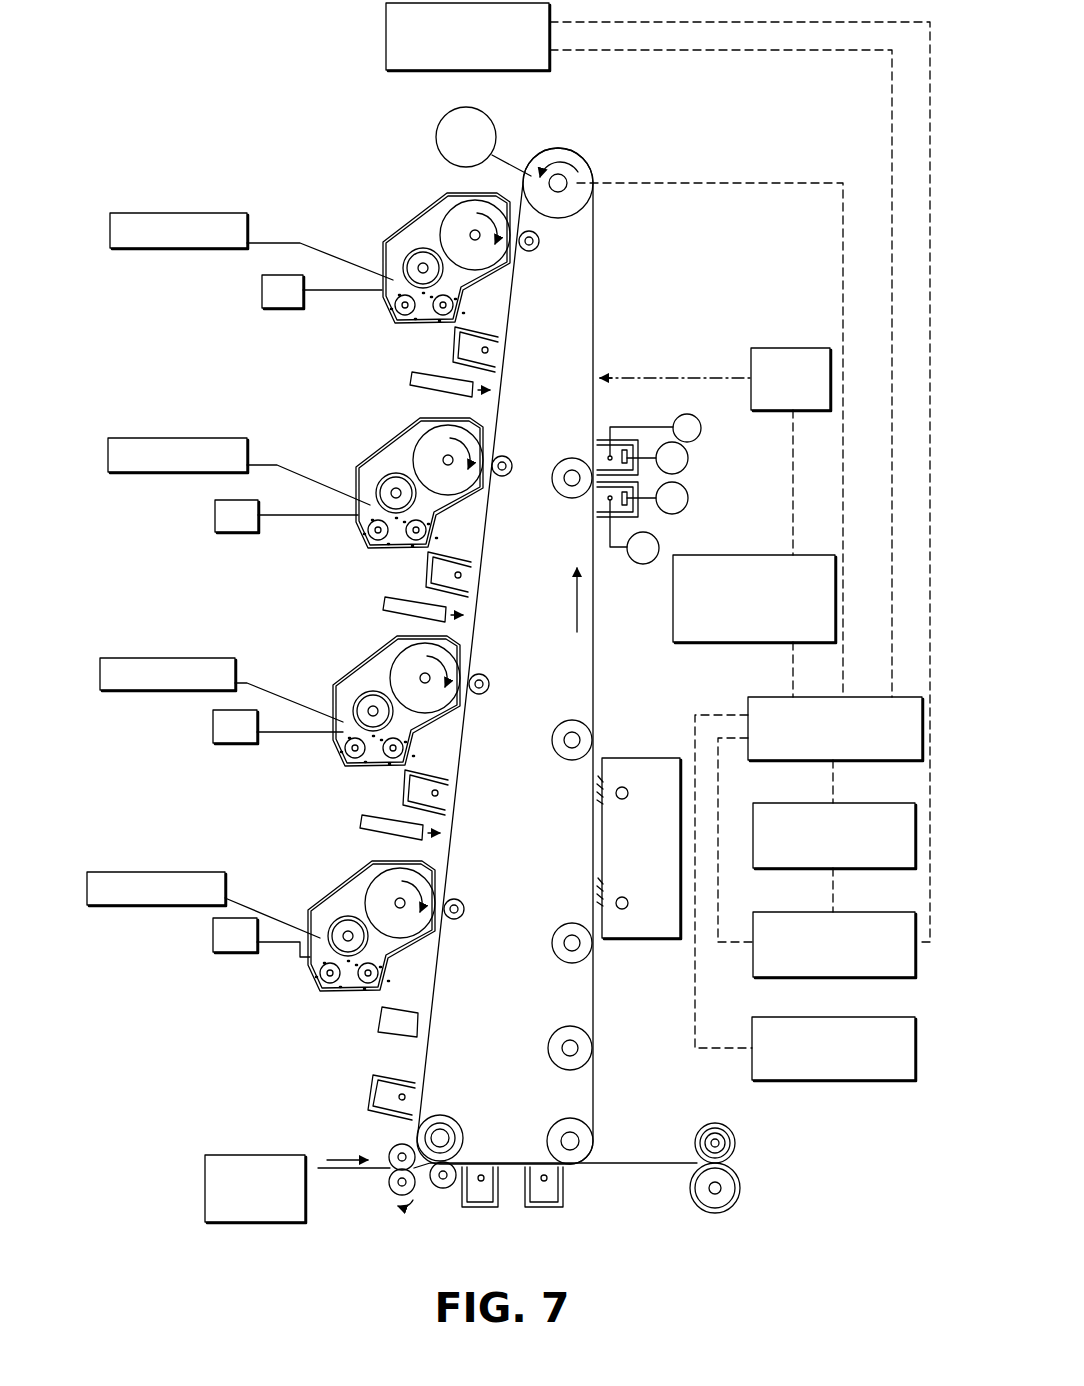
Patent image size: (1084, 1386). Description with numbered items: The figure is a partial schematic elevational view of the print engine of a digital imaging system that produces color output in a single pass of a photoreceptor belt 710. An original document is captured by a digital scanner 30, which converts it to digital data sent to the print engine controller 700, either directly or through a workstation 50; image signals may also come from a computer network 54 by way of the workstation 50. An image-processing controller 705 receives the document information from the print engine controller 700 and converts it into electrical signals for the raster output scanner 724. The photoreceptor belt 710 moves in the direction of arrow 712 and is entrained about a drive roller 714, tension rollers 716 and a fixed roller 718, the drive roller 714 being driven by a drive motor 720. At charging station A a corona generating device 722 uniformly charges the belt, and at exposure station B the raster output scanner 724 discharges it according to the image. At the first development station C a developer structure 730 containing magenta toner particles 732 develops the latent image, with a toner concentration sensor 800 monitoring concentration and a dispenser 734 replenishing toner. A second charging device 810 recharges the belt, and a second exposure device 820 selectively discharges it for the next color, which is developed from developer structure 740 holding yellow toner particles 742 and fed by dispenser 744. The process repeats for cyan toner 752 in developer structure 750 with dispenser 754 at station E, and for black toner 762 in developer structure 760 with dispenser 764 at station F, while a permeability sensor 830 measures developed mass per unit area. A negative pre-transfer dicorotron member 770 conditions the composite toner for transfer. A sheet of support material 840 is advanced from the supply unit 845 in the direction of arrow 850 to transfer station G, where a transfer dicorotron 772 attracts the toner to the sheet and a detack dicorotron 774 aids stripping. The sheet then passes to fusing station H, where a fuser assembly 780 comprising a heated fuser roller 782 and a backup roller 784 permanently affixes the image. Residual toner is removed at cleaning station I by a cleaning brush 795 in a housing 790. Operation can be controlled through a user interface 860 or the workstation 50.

The digital scanner 30 is at (385, 40).
The workstation 50 is at (806, 979).
The computer network 54 is at (806, 870).
The print engine controller 700 is at (806, 762).
The image-processing controller 705 is at (678, 646).
The photoreceptor belt 710 is at (665, 624).
The arrow 712 is at (577, 608).
The drive roller 714 is at (572, 152).
The tension rollers 716 is at (455, 1127).
The fixed roller 718 is at (551, 1136).
The drive motor 720 is at (436, 135).
The corona generating device 722 is at (752, 477).
The raster output scanner 724 is at (780, 348).
The developer structure 730 is at (422, 270).
The magenta toner particles 732 is at (389, 307).
The dispenser 734 is at (173, 213).
The developer structure 740 is at (395, 495).
The yellow toner particles 742 is at (362, 532).
The dispenser 744 is at (173, 438).
The developer structure 750 is at (372, 713).
The cyan toner 752 is at (339, 750).
The dispenser 754 is at (170, 658).
The developer structure 760 is at (347, 939).
The black toner 762 is at (312, 976).
The dispenser 764 is at (170, 872).
The negative pre-transfer dicorotron member 770 is at (377, 1078).
The transfer dicorotron 772 is at (475, 1210).
The detack dicorotron 774 is at (542, 1208).
The fuser assembly 780 is at (741, 1148).
The heated fuser roller 782 is at (723, 1126).
The backup roller 784 is at (727, 1208).
The housing 790 is at (636, 758).
The cleaning brush 795 is at (624, 910).
The toner concentration sensor 800 is at (262, 285).
The second charging device 810 is at (420, 571).
The second exposure device 820 is at (402, 606).
The permeability sensor 830 is at (370, 1020).
The sheet of support material 840 is at (368, 1170).
The supply unit 845 is at (205, 1172).
The arrow 850 is at (327, 1158).
The user interface 860 is at (865, 1082).